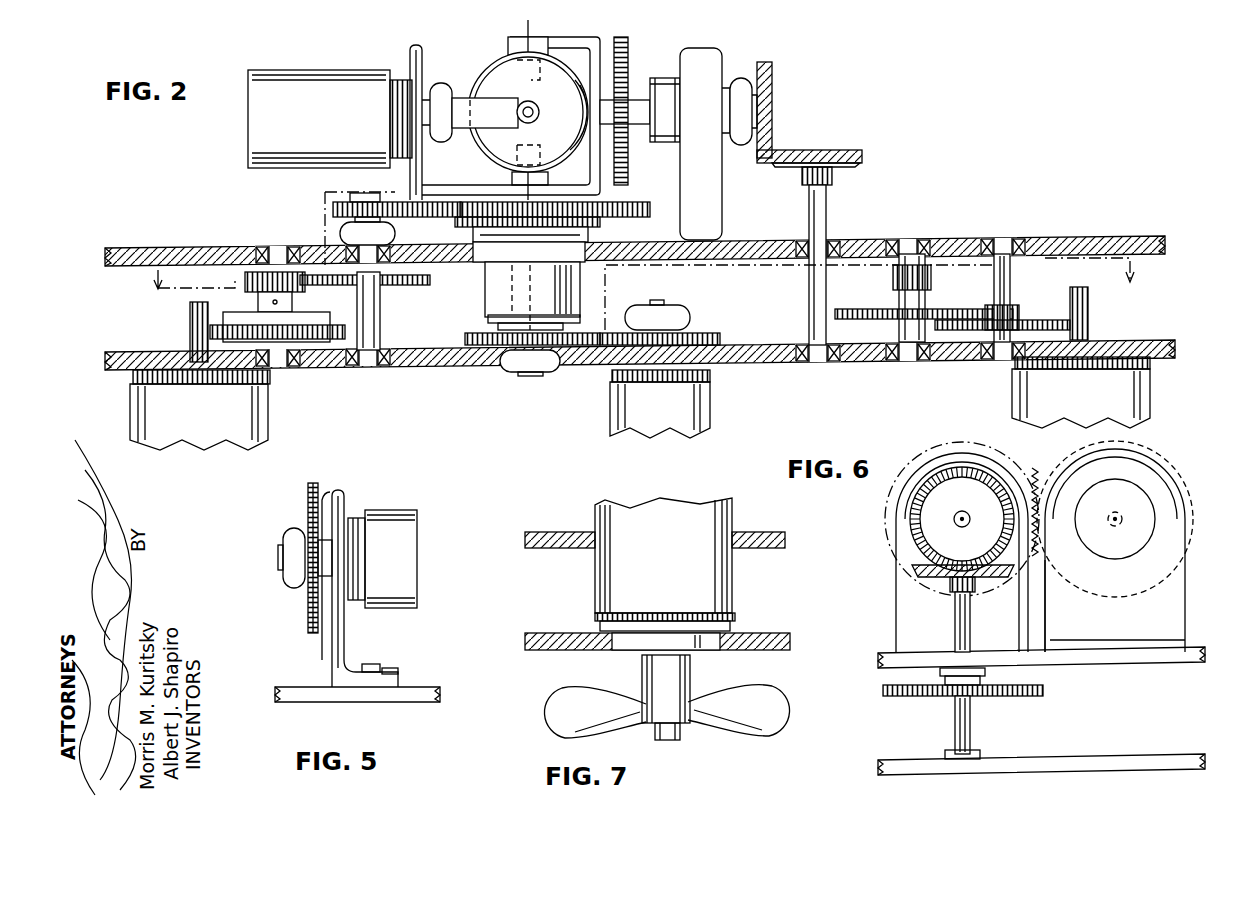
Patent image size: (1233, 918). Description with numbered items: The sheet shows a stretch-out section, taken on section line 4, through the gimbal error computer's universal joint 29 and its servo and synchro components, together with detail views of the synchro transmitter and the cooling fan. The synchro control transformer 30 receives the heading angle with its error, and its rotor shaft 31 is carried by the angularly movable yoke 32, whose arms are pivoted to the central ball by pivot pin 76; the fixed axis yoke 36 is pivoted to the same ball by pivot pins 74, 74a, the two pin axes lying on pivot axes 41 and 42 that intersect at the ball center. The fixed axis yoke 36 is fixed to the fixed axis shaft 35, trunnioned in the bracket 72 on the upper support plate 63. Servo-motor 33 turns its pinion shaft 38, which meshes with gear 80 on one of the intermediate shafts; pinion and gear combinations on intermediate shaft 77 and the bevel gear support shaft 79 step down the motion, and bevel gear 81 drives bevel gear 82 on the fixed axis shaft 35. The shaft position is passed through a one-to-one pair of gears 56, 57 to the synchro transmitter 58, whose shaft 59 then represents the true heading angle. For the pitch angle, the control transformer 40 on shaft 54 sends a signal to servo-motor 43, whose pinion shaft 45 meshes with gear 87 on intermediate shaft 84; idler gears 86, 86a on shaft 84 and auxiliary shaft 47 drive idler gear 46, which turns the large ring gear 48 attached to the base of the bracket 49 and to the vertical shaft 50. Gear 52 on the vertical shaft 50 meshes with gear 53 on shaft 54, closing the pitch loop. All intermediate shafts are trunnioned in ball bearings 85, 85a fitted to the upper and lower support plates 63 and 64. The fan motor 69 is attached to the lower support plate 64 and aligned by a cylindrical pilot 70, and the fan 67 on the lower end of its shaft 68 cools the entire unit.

In FIG. 2, the section line 4- 4 is at (639, 294).
In FIG. 2, the universal joint 29 is at (532, 38).
In FIG. 2, the synchro control transformer 30 is at (360, 68).
In FIG. 2, the rotor shaft 31 is at (440, 82).
In FIG. 2, the angularly movable yoke 32 is at (475, 128).
In FIG. 2, the servo-motor 33 is at (1148, 392).
In FIG. 2, the fixed axis shaft 35 is at (655, 78).
In FIG. 2, the fixed axis yoke 36 is at (598, 40).
In FIG. 2, the servo-motor shaft 38 is at (1088, 312).
In FIG. 2, the control transformer 40 is at (710, 410).
In FIG. 2, the pivot axis 41 is at (526, 24).
In FIG. 2, the pivot axis 42 is at (522, 104).
In FIG. 2, the servo-motor 43 is at (176, 445).
In FIG. 2, the servo-motor shaft 45 is at (190, 332).
In FIG. 2, the idler gear 46 is at (333, 210).
In FIG. 2, the auxiliary shaft 47 is at (380, 320).
In FIG. 2, the ring gear 48 is at (625, 224).
In FIG. 2, the bracket 49 is at (410, 176).
In FIG. 5, the bracket 49 is at (350, 633).
In FIG. 6, the bracket 49 is at (1186, 600).
In FIG. 2, the vertical shaft 50 is at (536, 378).
In FIG. 2, the gear 52 is at (465, 337).
In FIG. 2, the gear 53 is at (712, 333).
In FIG. 2, the shaft 54 is at (660, 302).
In FIG. 2, the gear 56 is at (630, 48).
In FIG. 6, the gear 56 is at (906, 468).
In FIG. 5, the driven gear 57 is at (308, 622).
In FIG. 6, the driven gear 57 is at (1178, 468).
In FIG. 5, the synchro transmitter 58 is at (416, 510).
In FIG. 6, the synchro transmitter 58 is at (1143, 545).
In FIG. 5, the shaft 59 is at (330, 490).
In FIG. 2, the upper support plate 63 is at (1075, 238).
In FIG. 7, the upper support plate 63 is at (537, 548).
In FIG. 6, the upper support plate 63 is at (1158, 665).
In FIG. 2, the lower support plate 64 is at (866, 365).
In FIG. 7, the lower support plate 64 is at (536, 650).
In FIG. 7, the fan 67 is at (752, 735).
In FIG. 7, the shaft 68 is at (668, 740).
In FIG. 7, the fan motor 69 is at (682, 510).
In FIG. 7, the cylindrical pilot 70 is at (614, 650).
In FIG. 2, the bracket 72 is at (722, 206).
In FIG. 2, the pivot pin 74 is at (540, 72).
In FIG. 2, the pivot pin 74a is at (517, 158).
In FIG. 2, the pivot pin 76 is at (522, 115).
In FIG. 2, the intermediate shaft 77 is at (928, 298).
In FIG. 2, the bevel gear support shaft 79 is at (828, 206).
In FIG. 6, the bevel gear support shaft 79 is at (955, 626).
In FIG. 2, the gear 80 is at (1048, 326).
In FIG. 2, the bevel gear 81 is at (860, 152).
In FIG. 6, the bevel gear 81 is at (916, 577).
In FIG. 2, the bevel gear 82 is at (768, 62).
In FIG. 6, the bevel gear 82 is at (910, 513).
In FIG. 2, the intermediate shaft 84 is at (280, 368).
In FIG. 2, the ball bearing 85 is at (375, 366).
In FIG. 2, the ball bearing 85a is at (394, 244).
In FIG. 2, the idler gear 86 is at (240, 280).
In FIG. 2, the idler gear 86a is at (430, 280).
In FIG. 2, the gear 87 is at (334, 322).